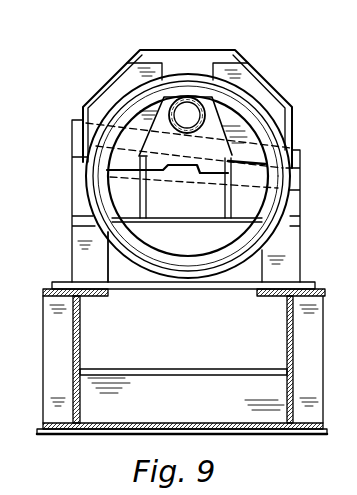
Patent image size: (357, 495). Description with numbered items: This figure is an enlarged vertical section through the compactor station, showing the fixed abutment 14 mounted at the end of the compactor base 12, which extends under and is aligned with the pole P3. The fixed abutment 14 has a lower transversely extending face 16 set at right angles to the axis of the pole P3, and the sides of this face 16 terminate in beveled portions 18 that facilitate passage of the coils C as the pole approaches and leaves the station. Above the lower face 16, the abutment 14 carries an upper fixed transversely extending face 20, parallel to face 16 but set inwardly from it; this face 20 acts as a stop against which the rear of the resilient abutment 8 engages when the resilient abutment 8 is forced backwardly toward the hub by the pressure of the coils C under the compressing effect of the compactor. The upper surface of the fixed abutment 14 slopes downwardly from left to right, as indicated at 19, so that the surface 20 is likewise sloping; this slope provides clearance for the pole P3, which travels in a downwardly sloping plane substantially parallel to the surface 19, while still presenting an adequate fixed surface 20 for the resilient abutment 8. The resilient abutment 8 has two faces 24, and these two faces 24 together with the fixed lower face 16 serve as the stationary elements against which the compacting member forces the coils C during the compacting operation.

The resilient abutment 8 is at (192, 49).
The faces 24 is at (117, 74).
The sloping upper surface 19 is at (293, 147).
The pole P3 is at (181, 96).
The coils C is at (298, 212).
The upper fixed transversely extending face 20 is at (300, 162).
The fixed abutment 14 is at (78, 199).
The beveled portions 18 is at (82, 239).
The lower transversely extending face 16 is at (122, 270).
The compactor base 12 is at (71, 336).